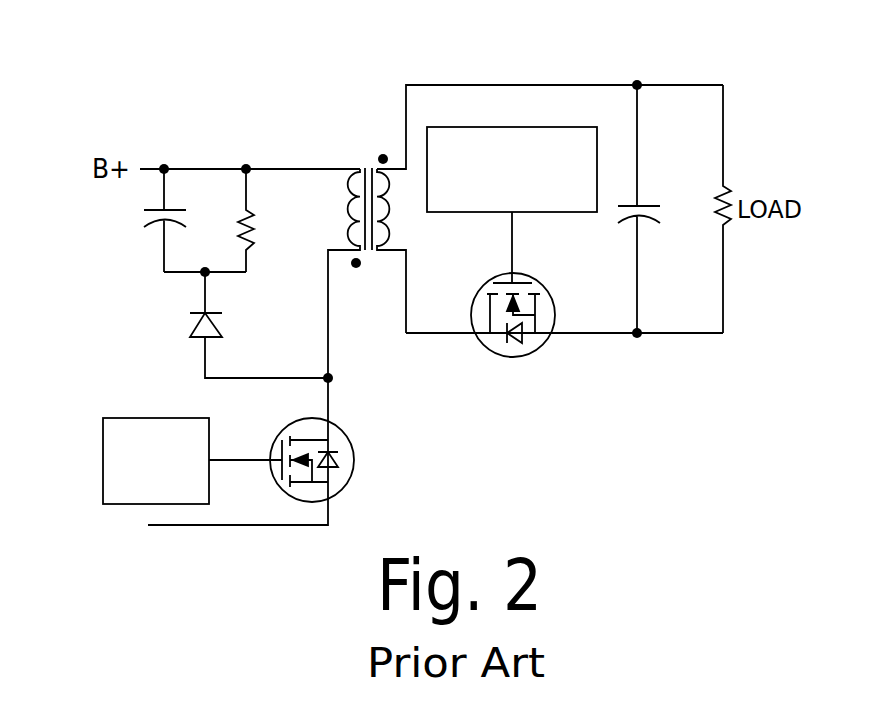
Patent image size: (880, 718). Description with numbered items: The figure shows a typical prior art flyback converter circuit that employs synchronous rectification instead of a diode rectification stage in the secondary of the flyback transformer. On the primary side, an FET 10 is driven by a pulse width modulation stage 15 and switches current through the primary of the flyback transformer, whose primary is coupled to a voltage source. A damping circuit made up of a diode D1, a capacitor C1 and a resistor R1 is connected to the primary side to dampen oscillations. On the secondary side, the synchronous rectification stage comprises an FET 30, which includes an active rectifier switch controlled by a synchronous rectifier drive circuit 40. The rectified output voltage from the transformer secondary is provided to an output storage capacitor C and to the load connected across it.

The FET 10 is at (354, 460).
The pulse width modulation stage 15 is at (103, 438).
The FET 30 is at (528, 352).
The synchronous rectifier drive circuit 40 is at (575, 138).
The capacitor C1 is at (147, 220).
The resistor R1 is at (264, 220).
The diode D1 is at (259, 325).
The output storage capacitor C is at (650, 227).